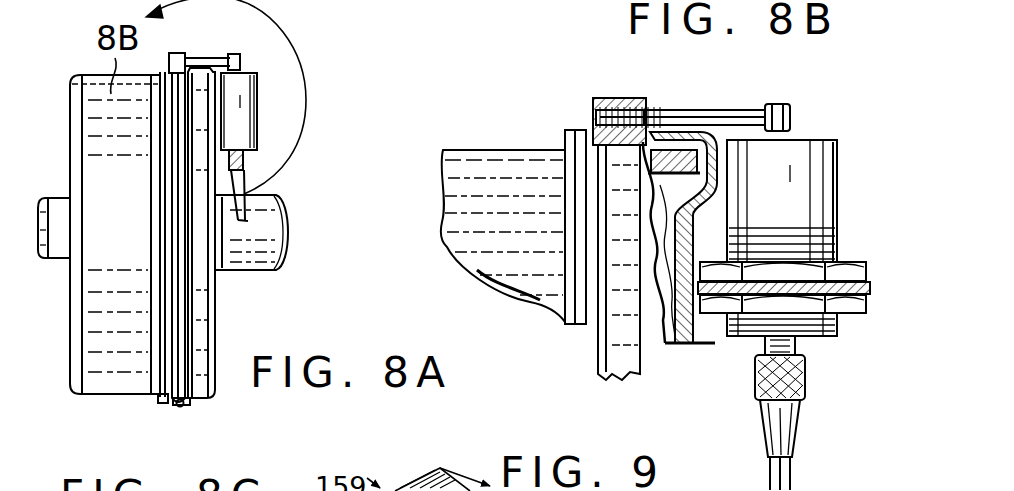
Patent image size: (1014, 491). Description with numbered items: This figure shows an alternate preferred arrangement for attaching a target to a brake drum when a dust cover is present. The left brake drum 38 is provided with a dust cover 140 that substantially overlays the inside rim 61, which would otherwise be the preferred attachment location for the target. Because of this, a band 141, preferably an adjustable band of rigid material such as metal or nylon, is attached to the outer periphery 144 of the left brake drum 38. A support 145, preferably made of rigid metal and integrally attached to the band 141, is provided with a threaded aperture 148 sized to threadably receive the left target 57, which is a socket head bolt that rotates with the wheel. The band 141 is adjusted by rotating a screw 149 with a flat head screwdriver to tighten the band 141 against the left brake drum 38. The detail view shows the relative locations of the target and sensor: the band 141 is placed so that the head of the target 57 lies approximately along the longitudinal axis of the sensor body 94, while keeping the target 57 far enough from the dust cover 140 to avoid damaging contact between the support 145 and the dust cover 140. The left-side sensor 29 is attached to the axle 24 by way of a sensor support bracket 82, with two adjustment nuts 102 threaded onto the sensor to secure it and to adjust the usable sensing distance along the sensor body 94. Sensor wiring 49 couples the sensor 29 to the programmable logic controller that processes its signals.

In FIG. 8A, the axle 24 is at (289, 252).
In FIG. 8A, the left-side sensor 29 is at (250, 116).
In FIG. 8B, the left-side sensor 29 is at (836, 160).
In FIG. 8A, the left brake drum 38 is at (118, 398).
In FIG. 8B, the left brake drum 38 is at (497, 152).
In FIG. 8B, the sensor wiring 49 is at (795, 472).
In FIG. 8A, the left target 57 is at (219, 58).
In FIG. 8B, the left target 57 is at (726, 104).
In FIG. 8B, the inside rim 61 is at (690, 174).
In FIG. 8B, the sensor support bracket 82 is at (866, 295).
In FIG. 8B, the sensor body 94 is at (840, 250).
In FIG. 8B, the adjustment nuts 102 is at (775, 268).
In FIG. 8A, the dust cover 140 is at (215, 295).
In FIG. 8B, the dust cover 140 is at (685, 343).
In FIG. 8A, the band 141 is at (178, 232).
In FIG. 8B, the band 141 is at (605, 358).
In FIG. 8A, the outer periphery 144 is at (166, 400).
In FIG. 8B, the support 145 is at (596, 105).
In FIG. 8B, the threaded aperture 148 is at (655, 55).
In FIG. 8A, the screw 149 is at (182, 406).